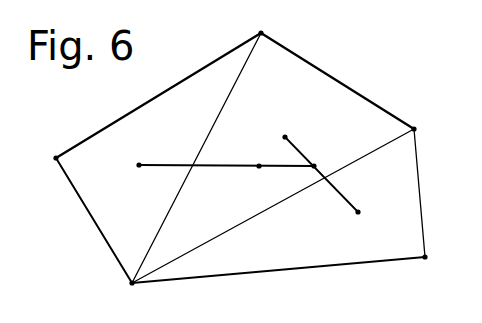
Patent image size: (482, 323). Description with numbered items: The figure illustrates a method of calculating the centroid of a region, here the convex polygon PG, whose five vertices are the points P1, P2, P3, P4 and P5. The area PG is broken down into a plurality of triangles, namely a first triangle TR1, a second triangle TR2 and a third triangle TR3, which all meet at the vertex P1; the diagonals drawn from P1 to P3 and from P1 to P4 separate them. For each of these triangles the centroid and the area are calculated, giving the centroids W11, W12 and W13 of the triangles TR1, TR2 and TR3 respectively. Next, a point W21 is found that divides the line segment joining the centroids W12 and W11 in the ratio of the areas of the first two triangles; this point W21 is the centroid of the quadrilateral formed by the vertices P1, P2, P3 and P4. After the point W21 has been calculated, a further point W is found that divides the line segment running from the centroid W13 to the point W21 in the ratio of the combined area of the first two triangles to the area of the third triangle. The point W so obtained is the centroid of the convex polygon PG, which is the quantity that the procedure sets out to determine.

The convex polygon PG is at (384, 101).
The vertex P1 is at (126, 295).
The vertex P2 is at (437, 264).
The vertex P3 is at (428, 128).
The vertex P4 is at (260, 24).
The vertex P5 is at (42, 155).
The triangle TR1 is at (291, 251).
The triangle TR2 is at (175, 248).
The triangle TR3 is at (108, 220).
The centroid of convex polygon W is at (257, 156).
The centroid of triangle TR1 W11 is at (379, 213).
The centroid of triangle TR2 W12 is at (318, 164).
The centroid of triangle TR3 W13 is at (222, 156).
The centroid of quadrilateral P1P2P3P4 W21 is at (333, 156).